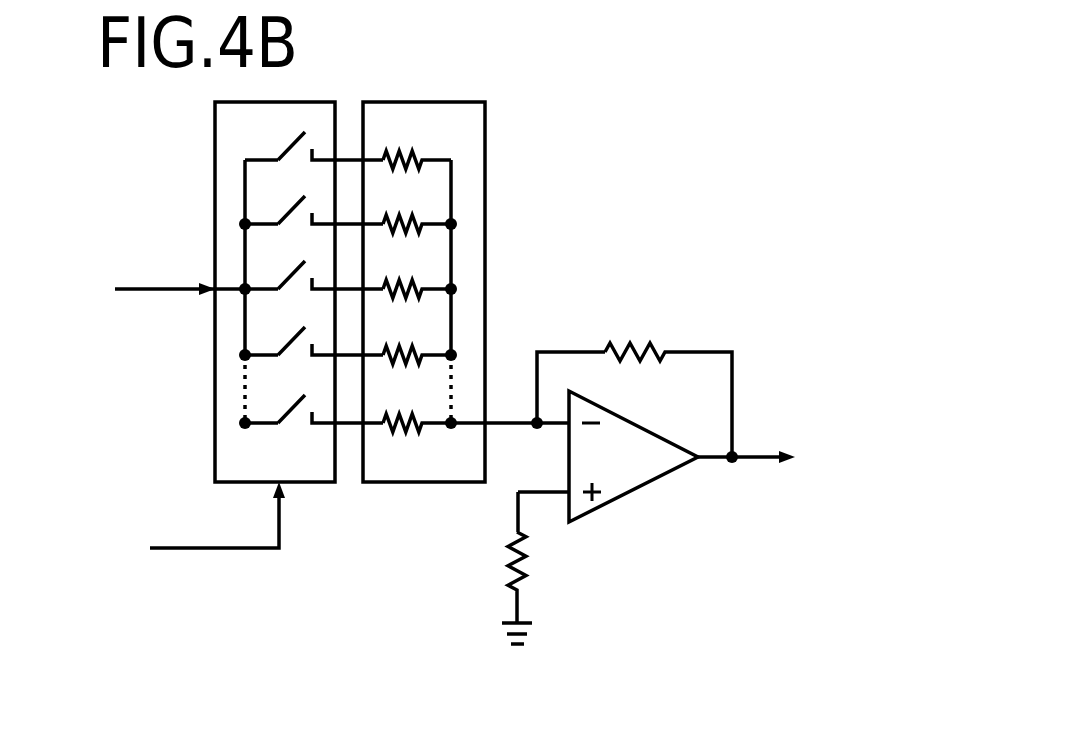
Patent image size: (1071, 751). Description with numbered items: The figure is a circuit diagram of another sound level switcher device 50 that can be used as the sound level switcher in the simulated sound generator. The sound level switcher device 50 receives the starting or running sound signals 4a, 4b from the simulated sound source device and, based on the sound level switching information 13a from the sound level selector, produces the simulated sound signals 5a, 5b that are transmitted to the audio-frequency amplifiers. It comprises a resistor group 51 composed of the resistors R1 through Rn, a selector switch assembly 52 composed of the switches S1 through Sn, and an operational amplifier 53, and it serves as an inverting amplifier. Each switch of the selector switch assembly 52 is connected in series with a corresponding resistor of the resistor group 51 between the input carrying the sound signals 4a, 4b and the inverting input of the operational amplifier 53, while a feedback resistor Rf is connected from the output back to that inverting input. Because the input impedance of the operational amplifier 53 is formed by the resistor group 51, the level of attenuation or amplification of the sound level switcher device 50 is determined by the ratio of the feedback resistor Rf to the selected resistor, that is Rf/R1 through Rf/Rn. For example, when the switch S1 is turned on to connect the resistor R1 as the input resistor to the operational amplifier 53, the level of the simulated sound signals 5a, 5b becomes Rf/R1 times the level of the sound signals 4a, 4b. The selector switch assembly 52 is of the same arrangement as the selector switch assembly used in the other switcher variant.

The sound level switcher device 50 is at (488, 68).
The resistor group 51 is at (485, 182).
The selector switch assembly 52 is at (215, 423).
The operational amplifier 53 is at (628, 494).
The switch S1 is at (284, 148).
The switch Sn is at (292, 412).
The resistor R1 is at (417, 158).
The resistor Rn is at (406, 430).
The feedback resistor Rf is at (637, 341).
The sound level switching information 13a is at (207, 548).
The starting sound signal 4a is at (161, 251).
The running sound signal 4b is at (150, 289).
The simulated sound signal 5a is at (767, 423).
The simulated sound signal 5b is at (760, 451).